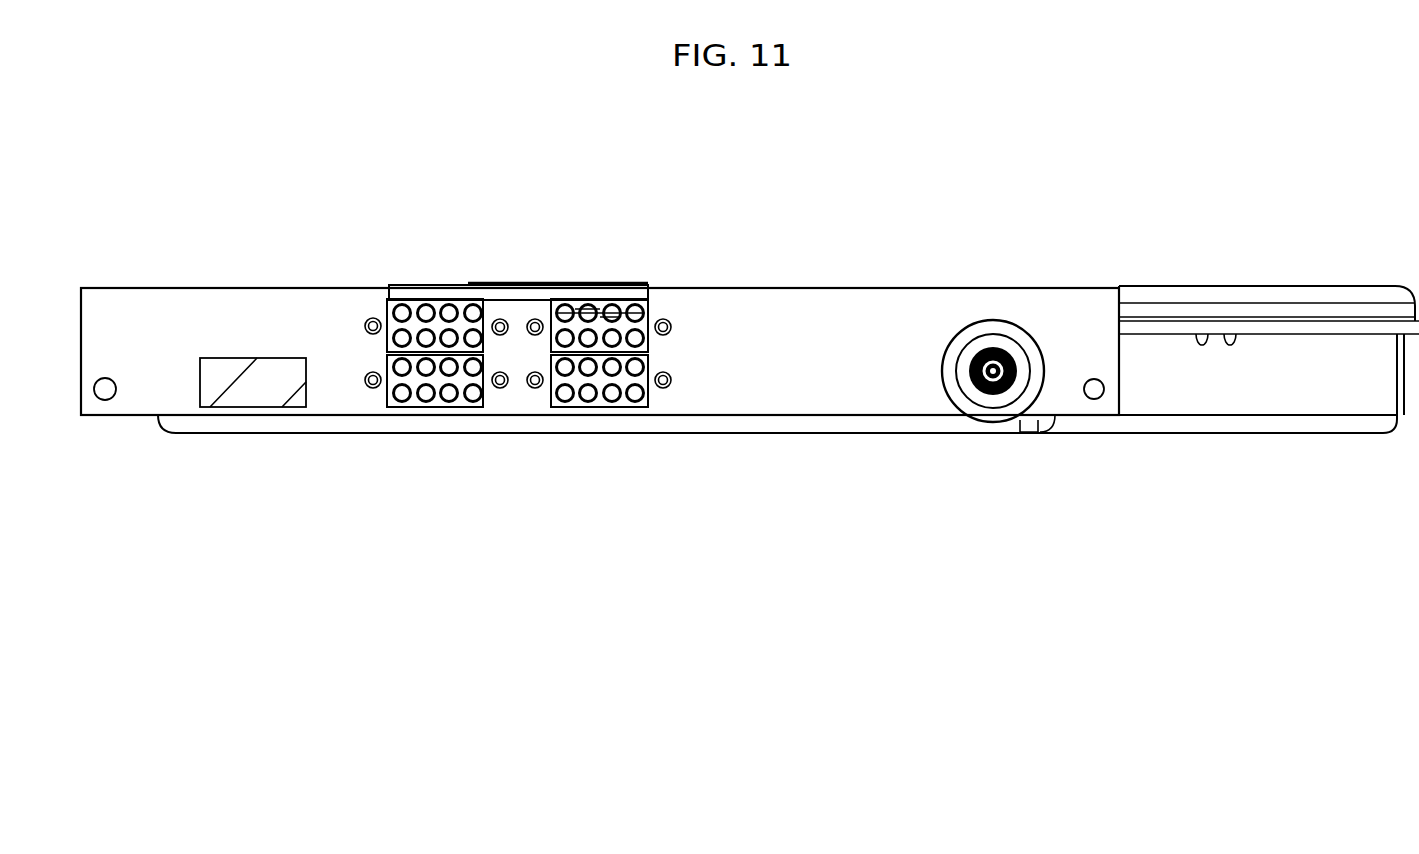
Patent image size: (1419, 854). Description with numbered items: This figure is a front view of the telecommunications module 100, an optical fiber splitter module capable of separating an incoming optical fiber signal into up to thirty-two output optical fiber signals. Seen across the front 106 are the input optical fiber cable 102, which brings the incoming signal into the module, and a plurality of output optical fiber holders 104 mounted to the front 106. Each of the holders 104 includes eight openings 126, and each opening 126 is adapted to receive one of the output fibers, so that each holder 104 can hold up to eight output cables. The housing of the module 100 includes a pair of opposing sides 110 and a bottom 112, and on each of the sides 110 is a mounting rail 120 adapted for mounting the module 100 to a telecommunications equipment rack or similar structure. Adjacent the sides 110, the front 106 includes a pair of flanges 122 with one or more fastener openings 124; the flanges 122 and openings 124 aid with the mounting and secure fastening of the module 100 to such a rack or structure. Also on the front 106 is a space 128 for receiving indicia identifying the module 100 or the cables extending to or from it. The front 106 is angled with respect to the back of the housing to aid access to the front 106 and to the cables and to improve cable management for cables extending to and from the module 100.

The telecommunications module 100 is at (530, 218).
The input optical fiber cable 102 is at (975, 394).
The output optical fiber holder 104 is at (473, 303).
The front 106 is at (801, 402).
The side 110 is at (1259, 399).
The bottom 112 is at (1192, 430).
The mounting rail 120 is at (1181, 327).
The flange 122 is at (95, 340).
The fastener opening 124 is at (107, 397).
The opening 126 is at (420, 313).
The space for receiving indicia 128 is at (257, 388).